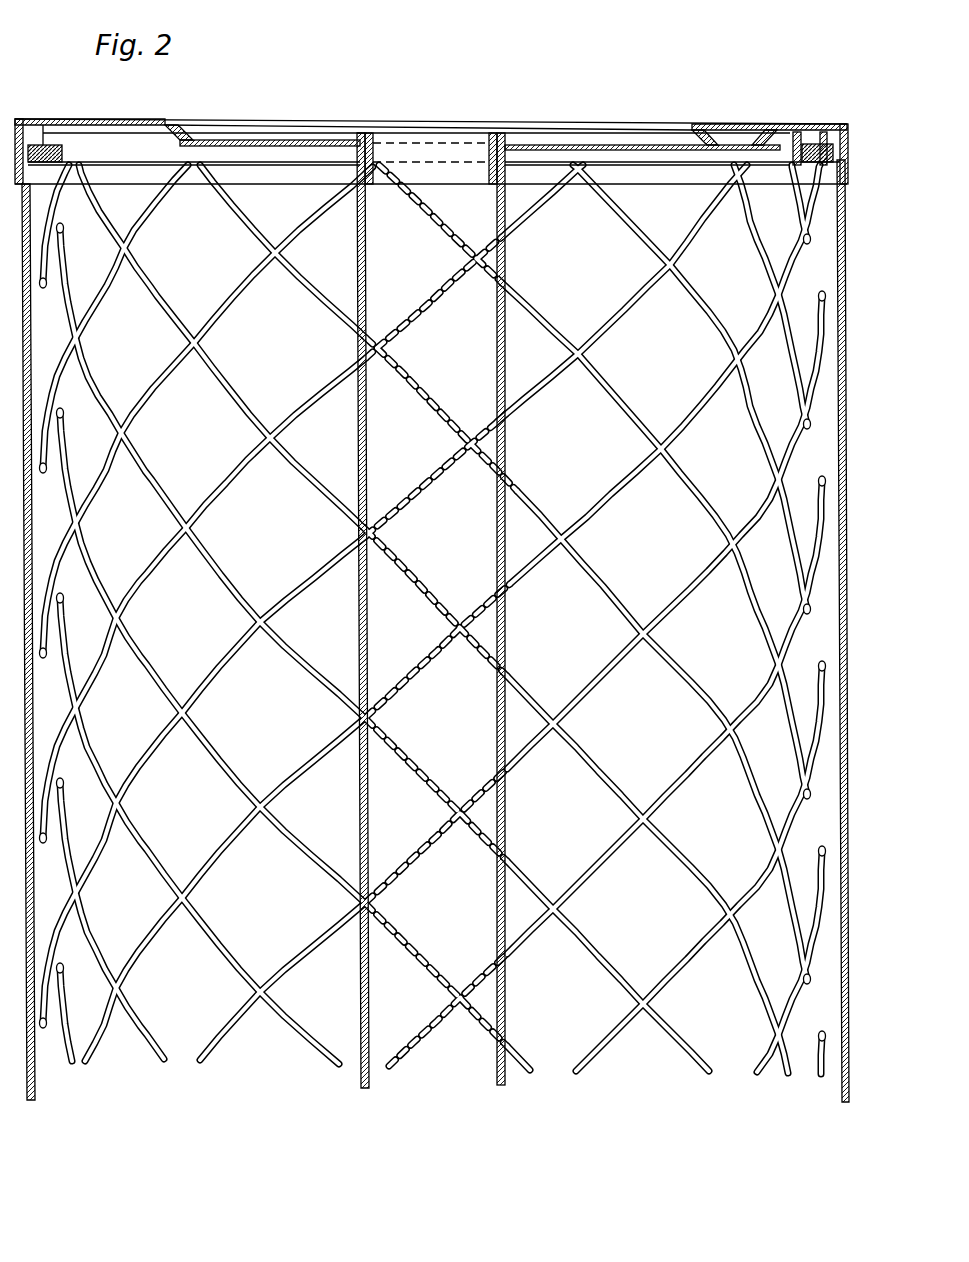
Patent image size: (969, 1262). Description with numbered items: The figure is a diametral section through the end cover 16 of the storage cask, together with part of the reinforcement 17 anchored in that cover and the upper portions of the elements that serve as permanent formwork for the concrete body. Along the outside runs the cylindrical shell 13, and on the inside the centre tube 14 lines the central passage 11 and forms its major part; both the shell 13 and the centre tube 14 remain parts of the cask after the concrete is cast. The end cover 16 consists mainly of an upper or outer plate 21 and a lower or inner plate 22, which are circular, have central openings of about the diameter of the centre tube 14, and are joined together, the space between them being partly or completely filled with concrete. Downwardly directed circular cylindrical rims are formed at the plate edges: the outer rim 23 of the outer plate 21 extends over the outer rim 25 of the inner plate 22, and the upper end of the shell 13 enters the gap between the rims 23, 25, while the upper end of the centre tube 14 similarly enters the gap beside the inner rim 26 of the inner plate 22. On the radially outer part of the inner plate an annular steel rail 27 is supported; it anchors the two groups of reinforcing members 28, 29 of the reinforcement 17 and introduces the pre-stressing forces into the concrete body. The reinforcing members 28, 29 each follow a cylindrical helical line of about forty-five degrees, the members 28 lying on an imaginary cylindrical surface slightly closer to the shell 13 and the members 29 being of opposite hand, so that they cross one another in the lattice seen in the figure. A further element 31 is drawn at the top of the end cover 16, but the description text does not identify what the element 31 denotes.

The central passage 11 is at (460, 551).
The cylindrical shell 13 is at (31, 1100).
The centre tube 14 is at (366, 1088).
The end cover 16 is at (762, 113).
The pre-stressed reinforcement 17 is at (824, 770).
The outer plate 21 is at (717, 126).
The inner plate 22 is at (650, 126).
The outer rim of outer plate 23 is at (850, 133).
The outer rim of inner plate 25 is at (520, 145).
The inner rim of inner plate 26 is at (487, 165).
The annular steel rail 27 is at (834, 154).
The reinforcing members of first group 28 is at (815, 609).
The reinforcing members of second group 29 is at (826, 670).
The top rail 31 is at (275, 136).